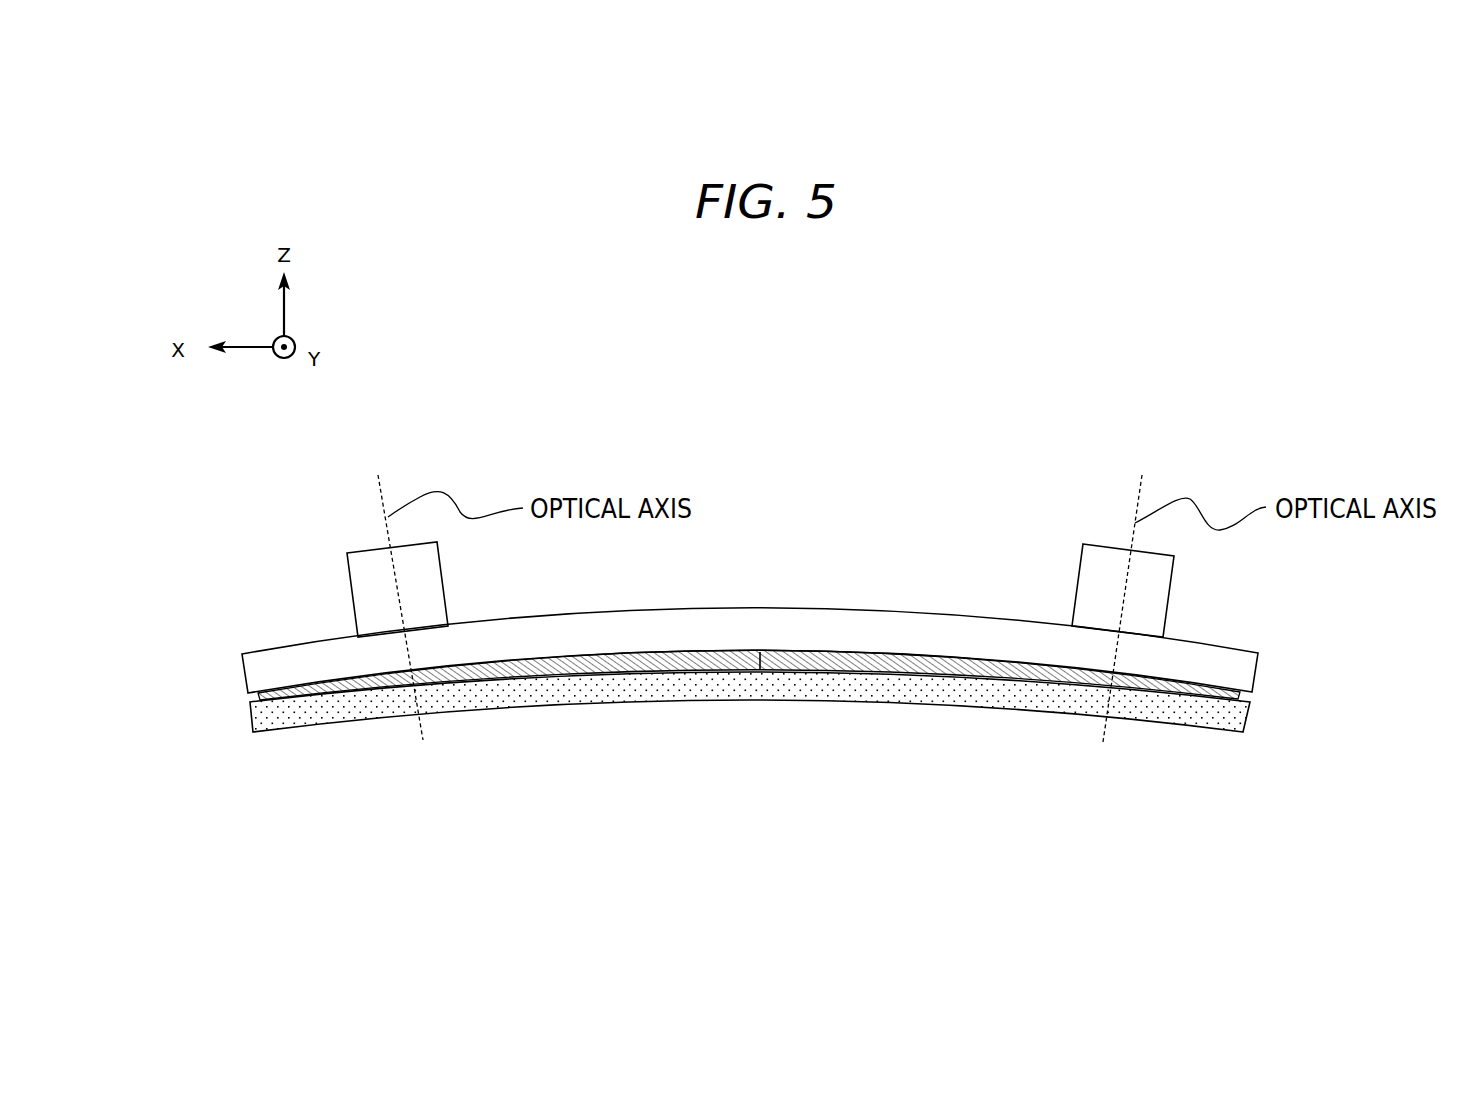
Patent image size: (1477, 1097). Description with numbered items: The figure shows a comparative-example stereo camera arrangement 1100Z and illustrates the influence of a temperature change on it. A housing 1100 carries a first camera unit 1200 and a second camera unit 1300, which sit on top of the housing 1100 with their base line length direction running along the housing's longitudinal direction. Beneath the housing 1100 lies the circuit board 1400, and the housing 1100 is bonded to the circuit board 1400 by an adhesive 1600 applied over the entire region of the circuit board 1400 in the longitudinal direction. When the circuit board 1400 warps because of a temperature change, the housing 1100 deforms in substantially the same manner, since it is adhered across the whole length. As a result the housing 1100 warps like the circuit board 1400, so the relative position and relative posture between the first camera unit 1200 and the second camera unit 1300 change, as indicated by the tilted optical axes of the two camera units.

The optical module 1100Z is at (912, 498).
The housing 1100 is at (817, 630).
The first camera unit 1200 is at (1152, 605).
The second camera unit 1300 is at (375, 605).
The circuit board 1400 is at (857, 692).
The adhesive 1600 is at (260, 698).